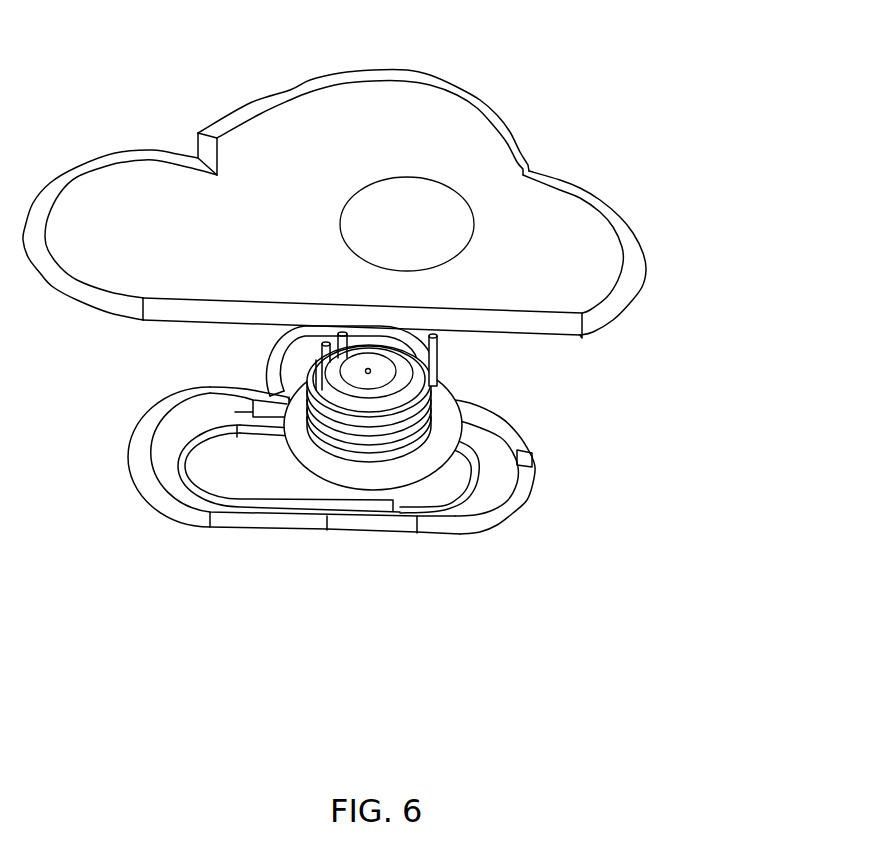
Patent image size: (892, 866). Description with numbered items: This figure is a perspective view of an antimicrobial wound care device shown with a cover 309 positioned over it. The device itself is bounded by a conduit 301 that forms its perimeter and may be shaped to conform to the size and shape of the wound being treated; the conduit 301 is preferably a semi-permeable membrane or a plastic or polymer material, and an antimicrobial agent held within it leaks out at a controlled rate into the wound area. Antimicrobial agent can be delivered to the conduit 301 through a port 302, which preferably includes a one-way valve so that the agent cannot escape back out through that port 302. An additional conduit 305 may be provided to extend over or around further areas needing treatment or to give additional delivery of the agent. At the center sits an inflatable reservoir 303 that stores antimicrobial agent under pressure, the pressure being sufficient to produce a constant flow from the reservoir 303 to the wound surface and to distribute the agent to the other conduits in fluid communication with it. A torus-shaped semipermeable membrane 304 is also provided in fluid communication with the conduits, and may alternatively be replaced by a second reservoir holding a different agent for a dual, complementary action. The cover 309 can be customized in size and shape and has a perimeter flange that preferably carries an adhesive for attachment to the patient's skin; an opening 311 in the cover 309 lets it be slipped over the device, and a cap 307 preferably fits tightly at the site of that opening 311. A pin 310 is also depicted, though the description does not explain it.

The conduit 301 is at (443, 534).
The port 302 is at (323, 359).
The inflatable reservoir 303 is at (400, 393).
The torus-shaped semipermeable membrane 304 is at (452, 427).
The additional conduit 305 is at (470, 490).
The cap 307 is at (378, 373).
The cover 309 is at (428, 87).
The pin 310 is at (440, 344).
The opening 311 is at (442, 227).